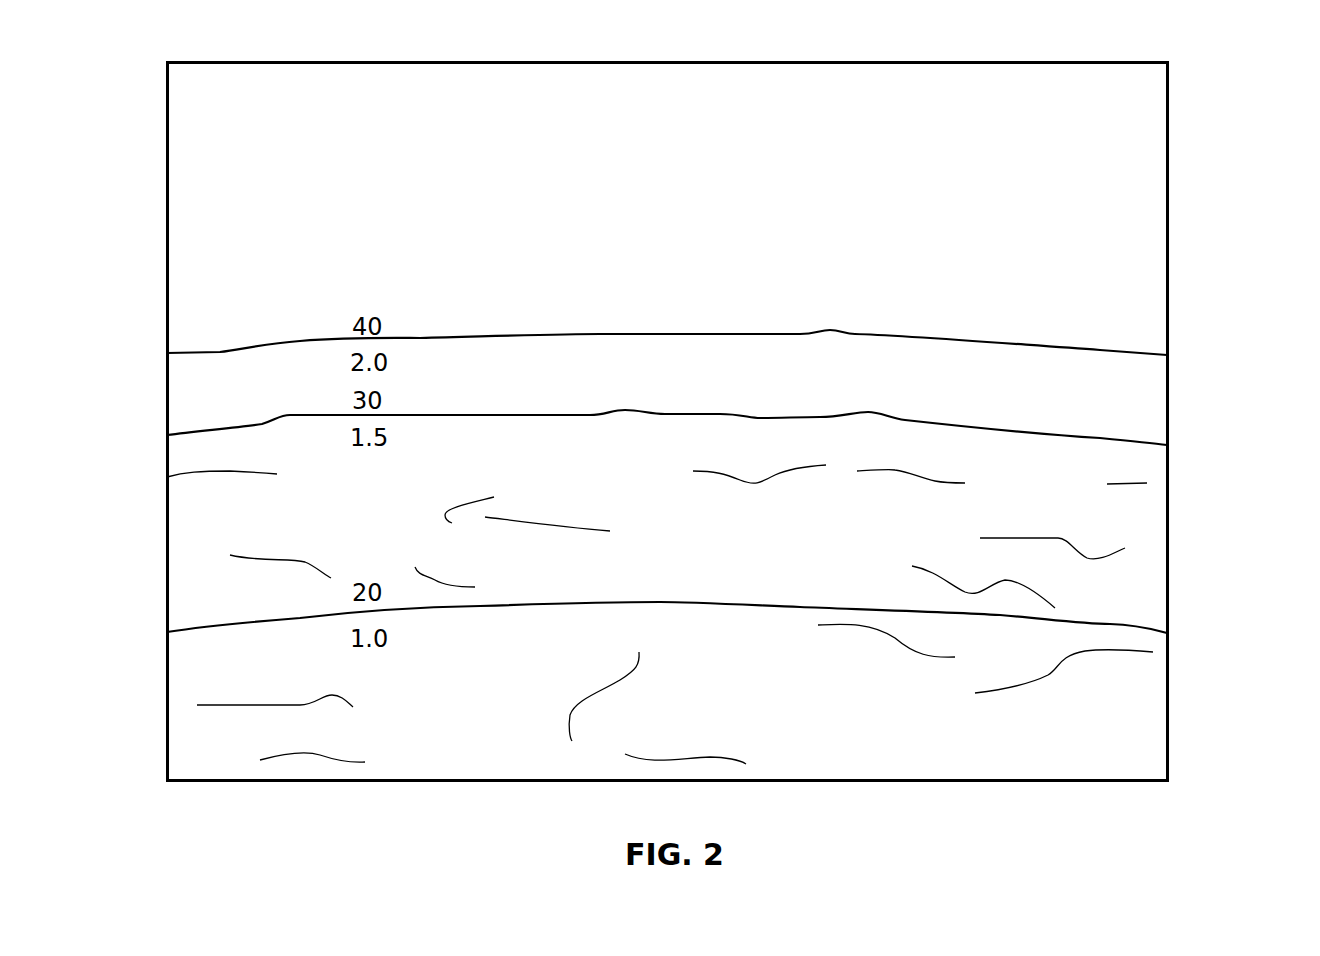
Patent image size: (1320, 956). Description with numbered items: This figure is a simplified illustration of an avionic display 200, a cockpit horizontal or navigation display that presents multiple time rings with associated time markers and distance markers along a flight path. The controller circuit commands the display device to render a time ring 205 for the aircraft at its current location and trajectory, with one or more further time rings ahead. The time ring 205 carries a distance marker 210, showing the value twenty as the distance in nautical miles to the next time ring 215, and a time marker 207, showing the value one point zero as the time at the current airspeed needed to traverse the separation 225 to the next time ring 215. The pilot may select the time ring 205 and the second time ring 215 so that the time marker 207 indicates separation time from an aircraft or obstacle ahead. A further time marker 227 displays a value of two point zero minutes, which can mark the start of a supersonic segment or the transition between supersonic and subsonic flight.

The avionic display 200 is at (243, 62).
The time marker 227 is at (335, 362).
The next time ring 215 is at (1099, 422).
The separation 225 is at (1175, 443).
The distance marker 210 is at (335, 593).
The time marker 207 is at (335, 640).
The time ring 205 is at (212, 646).